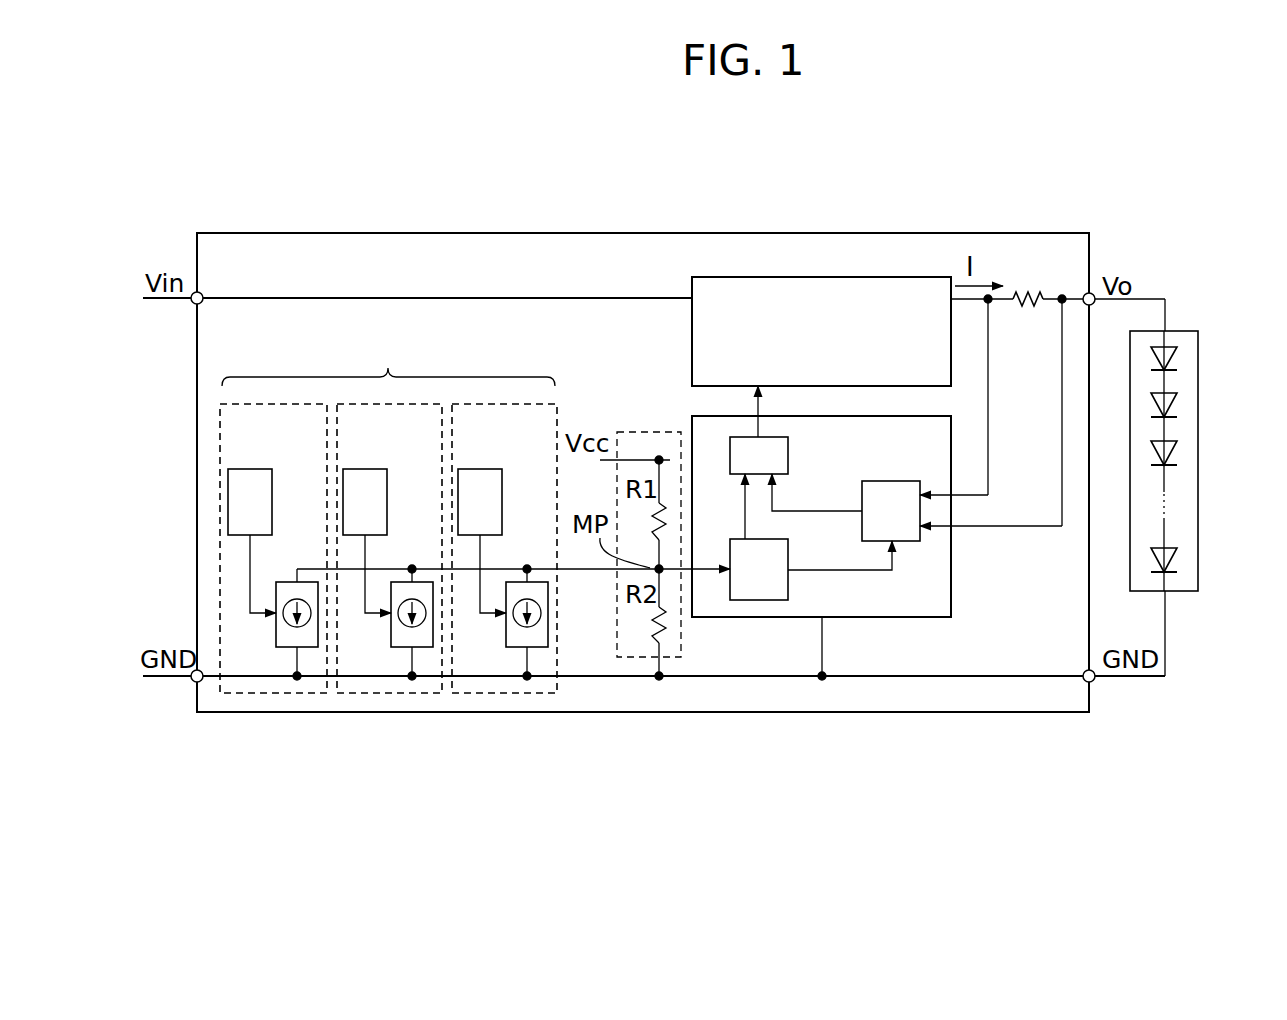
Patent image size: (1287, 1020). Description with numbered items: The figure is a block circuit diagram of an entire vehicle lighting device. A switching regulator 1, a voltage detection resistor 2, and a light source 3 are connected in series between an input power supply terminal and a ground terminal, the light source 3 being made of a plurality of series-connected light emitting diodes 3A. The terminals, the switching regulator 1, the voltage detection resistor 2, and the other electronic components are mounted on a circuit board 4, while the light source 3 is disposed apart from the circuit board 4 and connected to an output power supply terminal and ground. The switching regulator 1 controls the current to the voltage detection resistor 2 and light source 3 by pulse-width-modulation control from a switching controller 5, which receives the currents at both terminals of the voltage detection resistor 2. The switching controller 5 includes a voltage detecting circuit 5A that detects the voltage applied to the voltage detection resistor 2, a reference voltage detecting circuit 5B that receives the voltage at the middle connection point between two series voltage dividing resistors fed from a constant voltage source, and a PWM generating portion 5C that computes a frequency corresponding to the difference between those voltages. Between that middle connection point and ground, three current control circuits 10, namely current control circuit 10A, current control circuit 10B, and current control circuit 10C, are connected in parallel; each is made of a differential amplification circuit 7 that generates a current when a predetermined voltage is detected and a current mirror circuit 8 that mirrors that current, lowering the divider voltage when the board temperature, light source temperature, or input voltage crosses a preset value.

The switching regulator 1 is at (823, 277).
The voltage detection resistor 2 is at (1030, 299).
The light source 3 is at (1199, 461).
The light emitting diode 3A is at (1172, 356).
The circuit board 4 is at (552, 233).
The switching controller 5 is at (821, 566).
The voltage detecting circuit 5A is at (912, 481).
The reference voltage detecting circuit 5B is at (757, 600).
The PWM generating portion 5C is at (730, 445).
The differential amplification circuit 7 is at (245, 469).
The current mirror circuit 8 is at (278, 648).
The current control circuit 10 is at (387, 564).
The current control circuit 10A is at (362, 693).
The current control circuit 10B is at (245, 693).
The current control circuit 10C is at (478, 693).